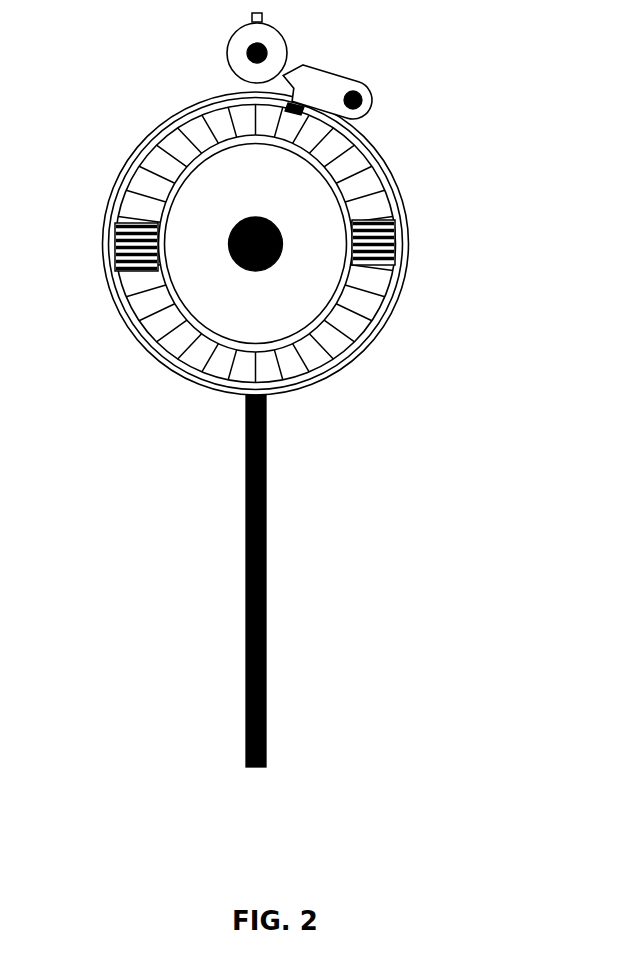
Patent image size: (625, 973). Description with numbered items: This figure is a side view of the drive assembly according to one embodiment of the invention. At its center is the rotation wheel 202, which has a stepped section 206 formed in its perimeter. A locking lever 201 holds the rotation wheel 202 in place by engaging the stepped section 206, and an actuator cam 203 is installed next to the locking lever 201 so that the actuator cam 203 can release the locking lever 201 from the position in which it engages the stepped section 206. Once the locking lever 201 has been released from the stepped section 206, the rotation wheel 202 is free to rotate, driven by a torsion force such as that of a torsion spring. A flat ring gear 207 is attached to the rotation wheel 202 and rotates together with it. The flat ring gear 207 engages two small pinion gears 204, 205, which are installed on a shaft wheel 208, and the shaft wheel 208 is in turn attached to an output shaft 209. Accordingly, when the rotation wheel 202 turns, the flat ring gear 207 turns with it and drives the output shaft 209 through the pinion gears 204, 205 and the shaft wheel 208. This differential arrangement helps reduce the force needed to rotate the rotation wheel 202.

The locking lever 201 is at (373, 88).
The rotation wheel 202 is at (385, 336).
The actuator cam 203 is at (226, 56).
The small pinion gear 204 is at (125, 252).
The small pinion gear 205 is at (388, 257).
The stepped section 206 is at (283, 113).
The flat ring gear 207 is at (157, 165).
The shaft wheel 208 is at (225, 302).
The output shaft 209 is at (275, 267).